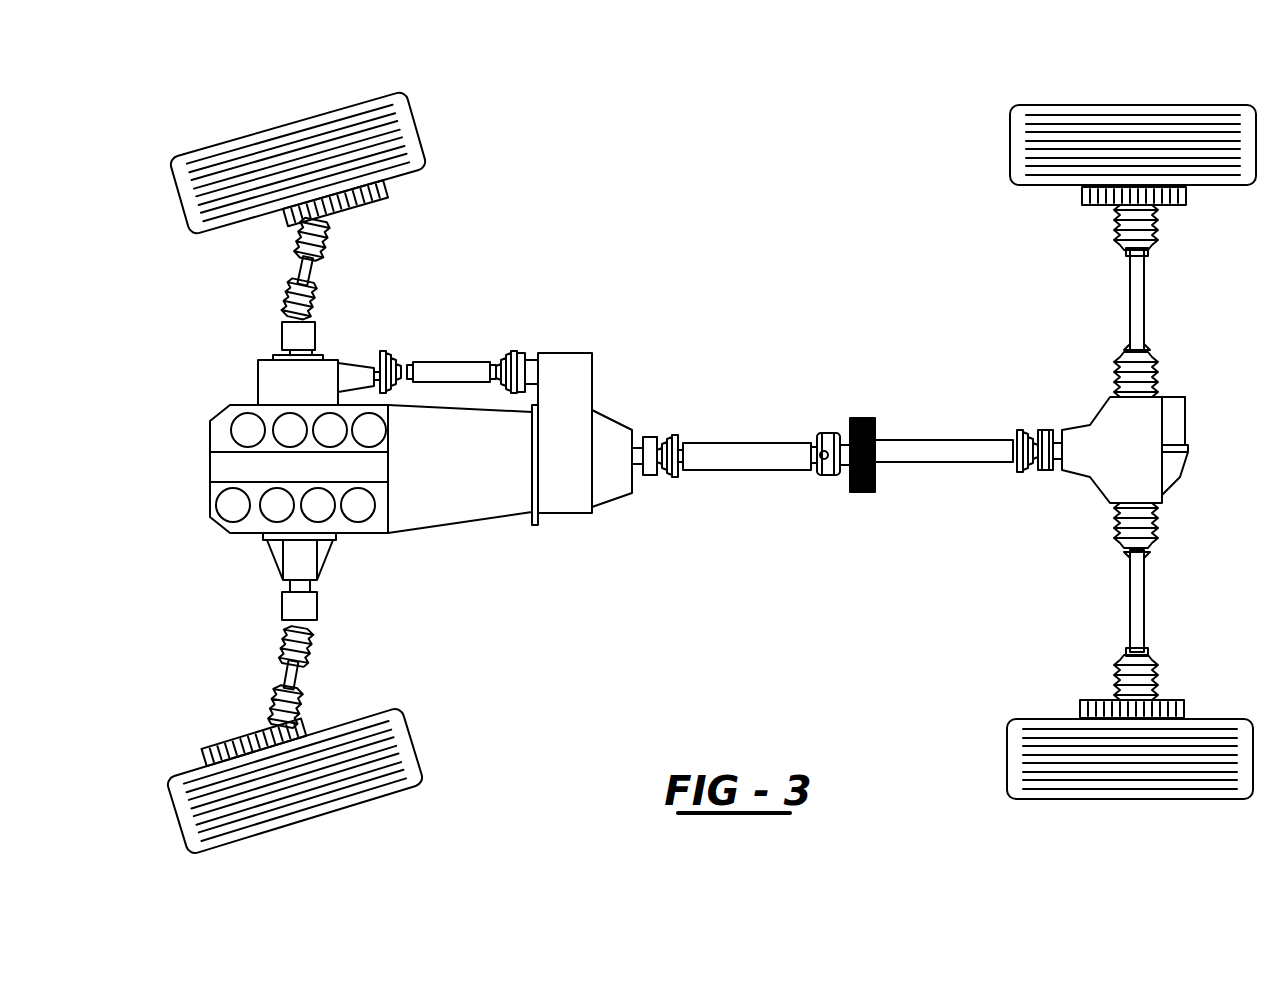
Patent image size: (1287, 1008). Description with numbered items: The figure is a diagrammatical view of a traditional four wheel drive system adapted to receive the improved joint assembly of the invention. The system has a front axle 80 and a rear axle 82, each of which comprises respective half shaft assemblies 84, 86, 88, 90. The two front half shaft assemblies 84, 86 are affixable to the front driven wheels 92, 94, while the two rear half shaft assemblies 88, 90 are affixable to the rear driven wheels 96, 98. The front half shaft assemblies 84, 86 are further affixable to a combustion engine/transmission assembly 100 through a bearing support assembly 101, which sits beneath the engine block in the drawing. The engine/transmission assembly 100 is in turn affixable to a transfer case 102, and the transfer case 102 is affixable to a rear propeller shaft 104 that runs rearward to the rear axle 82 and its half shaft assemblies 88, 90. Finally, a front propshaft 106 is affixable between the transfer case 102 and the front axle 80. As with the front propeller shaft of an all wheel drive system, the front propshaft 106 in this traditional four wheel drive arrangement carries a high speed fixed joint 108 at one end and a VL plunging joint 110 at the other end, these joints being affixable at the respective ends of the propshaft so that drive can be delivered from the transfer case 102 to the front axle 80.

The front axle 80 is at (245, 377).
The rear axle 82 is at (1187, 412).
The half shaft assembly 84 is at (310, 637).
The half shaft assembly 86 is at (320, 277).
The half shaft assembly 88 is at (1143, 600).
The half shaft assembly 90 is at (1145, 280).
The driven wheel 92 is at (373, 800).
The driven wheel 94 is at (232, 138).
The driven wheel 96 is at (1005, 758).
The driven wheel 98 is at (1030, 103).
The combustion engine/transmission assembly 100 is at (447, 523).
The bearing support assembly 101 is at (273, 563).
The transfer case 102 is at (575, 352).
The rear propeller shaft 104 is at (778, 442).
The front propshaft 106 is at (459, 358).
The high speed fixed joint 108 is at (392, 352).
The VL plunging joint 110 is at (512, 352).